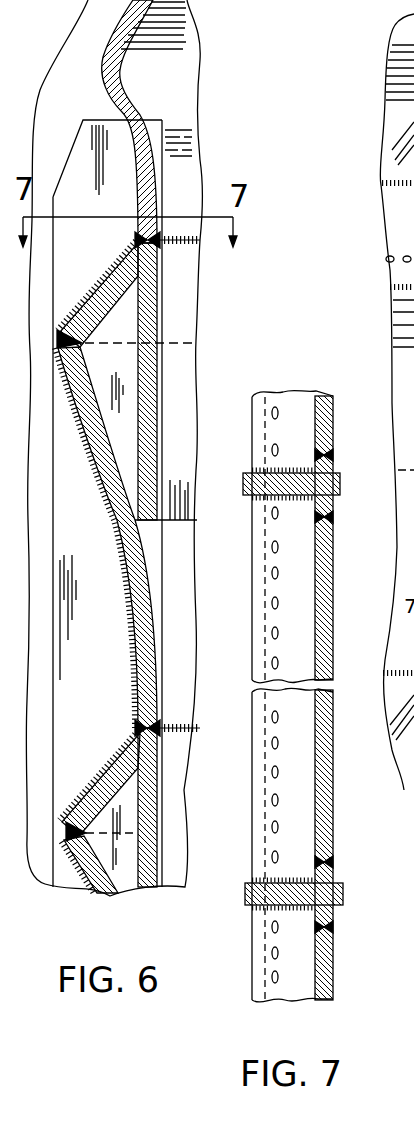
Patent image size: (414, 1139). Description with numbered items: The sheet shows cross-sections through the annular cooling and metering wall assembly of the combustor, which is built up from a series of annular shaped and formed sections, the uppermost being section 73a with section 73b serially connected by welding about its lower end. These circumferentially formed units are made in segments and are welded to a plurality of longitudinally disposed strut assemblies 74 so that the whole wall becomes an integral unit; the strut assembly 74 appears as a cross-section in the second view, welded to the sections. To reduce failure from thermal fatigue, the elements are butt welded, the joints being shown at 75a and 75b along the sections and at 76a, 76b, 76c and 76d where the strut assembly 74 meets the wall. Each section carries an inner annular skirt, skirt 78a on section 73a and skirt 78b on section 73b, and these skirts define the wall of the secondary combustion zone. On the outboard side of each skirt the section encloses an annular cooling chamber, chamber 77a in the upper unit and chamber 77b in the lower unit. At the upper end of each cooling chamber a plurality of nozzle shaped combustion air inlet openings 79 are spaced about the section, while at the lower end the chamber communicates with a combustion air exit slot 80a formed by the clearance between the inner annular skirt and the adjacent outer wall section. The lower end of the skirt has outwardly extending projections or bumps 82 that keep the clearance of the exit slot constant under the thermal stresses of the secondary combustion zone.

In FIG. 6, the strut assembly 74 is at (80, 157).
In FIG. 7, the strut assembly 74 is at (262, 480).
In FIG. 6, the butt weld 75a is at (136, 240).
In FIG. 6, the butt weld 75b is at (136, 729).
In FIG. 6, the nozzle shaped combustion air inlet opening 79 is at (93, 315).
In FIG. 7, the nozzle shaped combustion air inlet opening 79 is at (272, 603).
In FIG. 6, the inner annular skirt 78a is at (150, 330).
In FIG. 6, the annular cooling chamber 77a is at (113, 360).
In FIG. 6, the outwardly extending projection or bump 82 is at (134, 493).
In FIG. 6, the annular shaped and formed section 73a is at (110, 470).
In FIG. 7, the annular shaped and formed section 73a is at (250, 637).
In FIG. 6, the combustion air exit slot 80a is at (138, 522).
In FIG. 6, the inner annular skirt 78b is at (150, 806).
In FIG. 6, the annular cooling chamber 77b is at (127, 860).
In FIG. 6, the annular shaped and formed section 73b is at (77, 880).
In FIG. 7, the butt weld 76a is at (334, 456).
In FIG. 7, the butt weld 76b is at (334, 518).
In FIG. 7, the butt weld 76c is at (334, 863).
In FIG. 7, the butt weld 76d is at (334, 928).